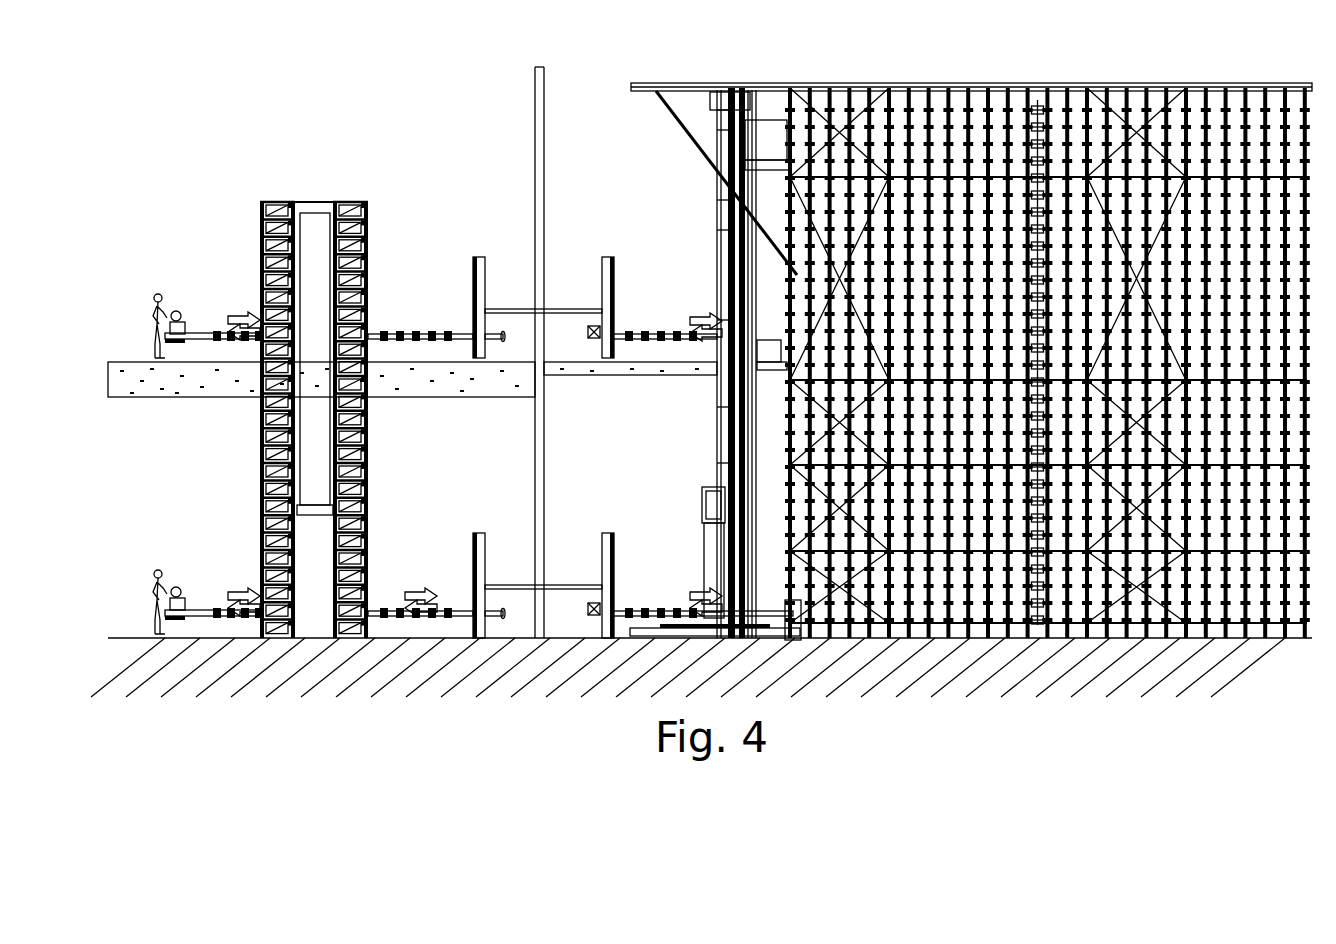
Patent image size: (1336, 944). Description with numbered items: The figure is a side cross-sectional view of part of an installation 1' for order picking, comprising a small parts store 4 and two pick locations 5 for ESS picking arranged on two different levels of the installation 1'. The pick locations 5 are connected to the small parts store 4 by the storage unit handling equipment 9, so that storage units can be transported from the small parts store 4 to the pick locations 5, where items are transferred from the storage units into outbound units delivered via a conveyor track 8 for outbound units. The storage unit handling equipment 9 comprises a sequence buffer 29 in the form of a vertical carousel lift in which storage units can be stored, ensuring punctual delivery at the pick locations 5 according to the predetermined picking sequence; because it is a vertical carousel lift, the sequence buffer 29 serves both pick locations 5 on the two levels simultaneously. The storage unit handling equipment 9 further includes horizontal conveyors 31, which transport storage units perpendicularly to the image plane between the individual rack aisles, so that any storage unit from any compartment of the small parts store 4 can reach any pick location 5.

The installation 1' is at (875, 348).
The small parts store (SPS) 4 is at (922, 112).
The pick location 5 is at (175, 312).
The conveyor track for outbound units 8 is at (180, 354).
The storage unit handling equipment 9 is at (410, 228).
The sequence buffer 29 is at (285, 200).
The horizontal conveyor 31 is at (498, 345).